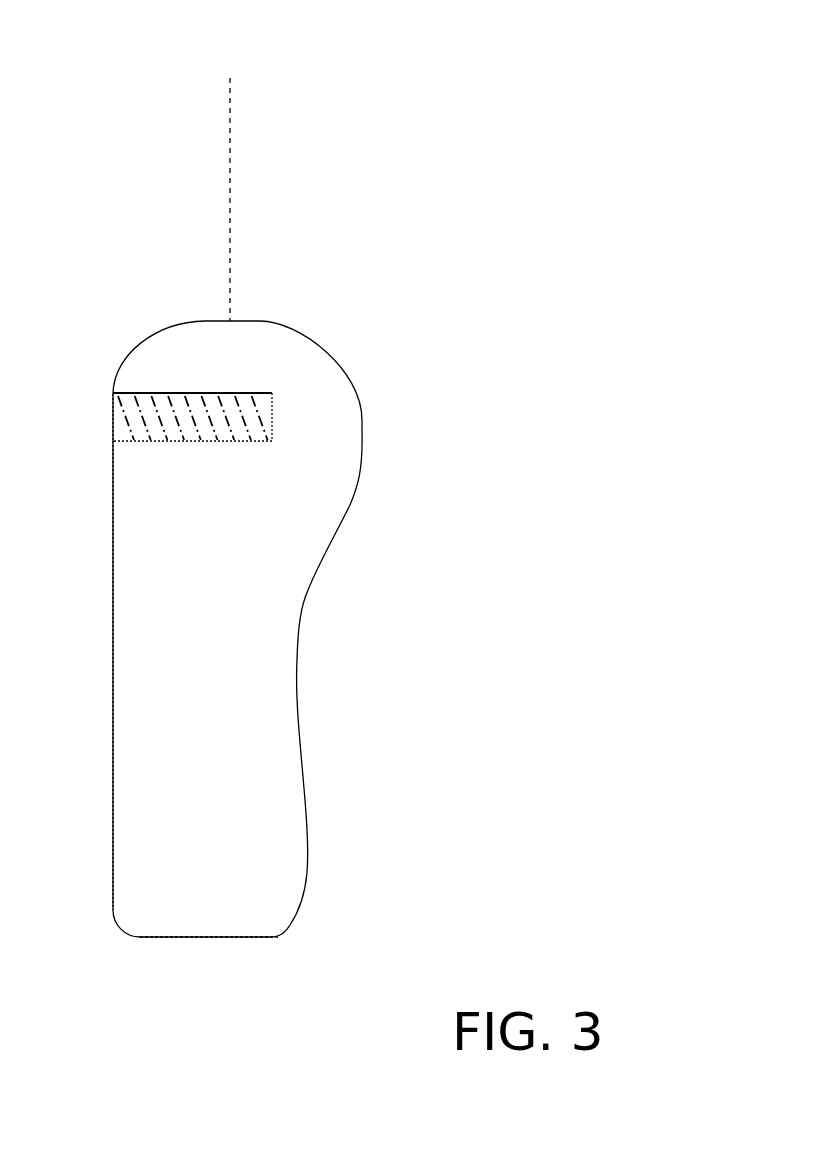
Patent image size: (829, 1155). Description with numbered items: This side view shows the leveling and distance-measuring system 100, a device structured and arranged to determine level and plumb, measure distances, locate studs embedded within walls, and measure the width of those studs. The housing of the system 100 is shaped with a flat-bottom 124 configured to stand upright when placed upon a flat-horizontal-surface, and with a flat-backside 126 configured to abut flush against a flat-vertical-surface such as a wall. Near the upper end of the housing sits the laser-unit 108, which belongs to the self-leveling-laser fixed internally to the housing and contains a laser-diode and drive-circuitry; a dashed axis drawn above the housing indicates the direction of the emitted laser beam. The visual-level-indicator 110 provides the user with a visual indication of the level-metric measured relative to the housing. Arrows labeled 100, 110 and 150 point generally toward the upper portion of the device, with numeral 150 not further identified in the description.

The leveling and distance-measuring system 100 is at (340, 84).
The visual-level-indicator 110 is at (377, 114).
The shaft axis / member 150 is at (410, 151).
The laser-unit 108 is at (110, 417).
The flat-backside 126 is at (110, 698).
The flat-bottom 124 is at (218, 940).